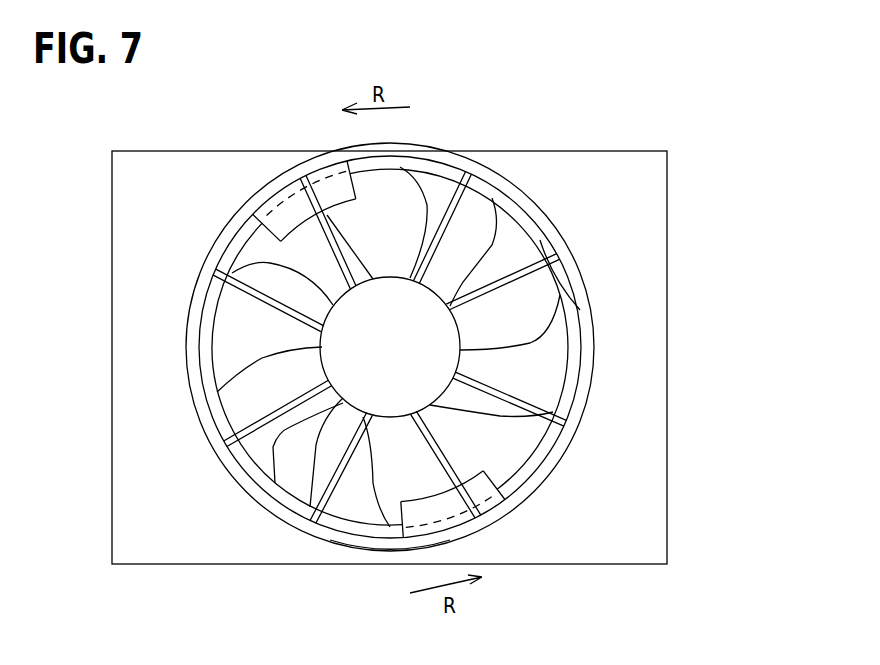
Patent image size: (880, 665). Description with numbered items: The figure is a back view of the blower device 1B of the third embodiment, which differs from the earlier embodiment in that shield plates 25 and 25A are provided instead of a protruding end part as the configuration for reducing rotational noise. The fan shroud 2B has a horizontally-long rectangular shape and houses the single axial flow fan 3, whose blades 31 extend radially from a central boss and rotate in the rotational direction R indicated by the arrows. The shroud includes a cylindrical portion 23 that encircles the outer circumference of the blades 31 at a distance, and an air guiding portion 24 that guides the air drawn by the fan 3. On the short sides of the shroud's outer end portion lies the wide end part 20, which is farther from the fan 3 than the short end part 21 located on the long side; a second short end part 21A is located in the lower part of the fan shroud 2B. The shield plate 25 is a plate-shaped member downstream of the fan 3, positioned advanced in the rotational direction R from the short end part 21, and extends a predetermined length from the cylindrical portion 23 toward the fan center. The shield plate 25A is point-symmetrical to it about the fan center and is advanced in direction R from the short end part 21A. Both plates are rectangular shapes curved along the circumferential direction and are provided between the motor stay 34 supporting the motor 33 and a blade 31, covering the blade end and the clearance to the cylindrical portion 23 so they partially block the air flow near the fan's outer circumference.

The blower device 1B is at (637, 146).
The fan shroud 2B is at (575, 174).
The fan 3 is at (503, 420).
The wide end part 20 is at (112, 235).
The short end part 21 is at (460, 153).
The short end part 21A is at (385, 556).
The cylindrical portion 23 is at (552, 237).
The air guiding portion 24 is at (627, 180).
The shield plate 25 is at (290, 215).
The shield plate 25A is at (448, 507).
The blade 31 is at (480, 208).
The motor 33 is at (351, 393).
The motor stay 34 is at (332, 475).